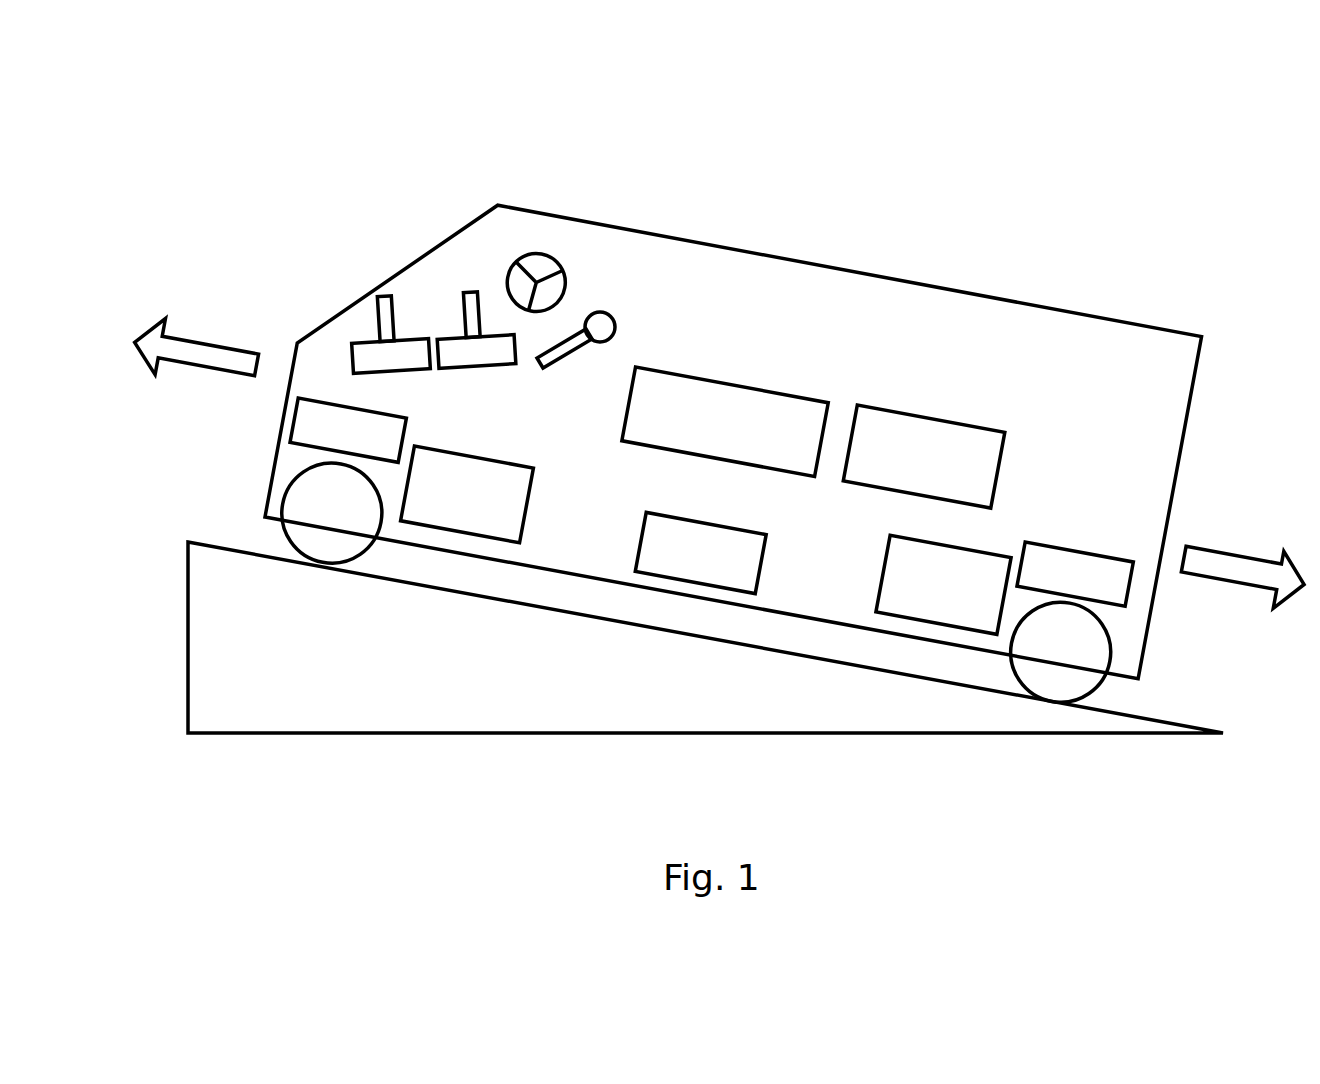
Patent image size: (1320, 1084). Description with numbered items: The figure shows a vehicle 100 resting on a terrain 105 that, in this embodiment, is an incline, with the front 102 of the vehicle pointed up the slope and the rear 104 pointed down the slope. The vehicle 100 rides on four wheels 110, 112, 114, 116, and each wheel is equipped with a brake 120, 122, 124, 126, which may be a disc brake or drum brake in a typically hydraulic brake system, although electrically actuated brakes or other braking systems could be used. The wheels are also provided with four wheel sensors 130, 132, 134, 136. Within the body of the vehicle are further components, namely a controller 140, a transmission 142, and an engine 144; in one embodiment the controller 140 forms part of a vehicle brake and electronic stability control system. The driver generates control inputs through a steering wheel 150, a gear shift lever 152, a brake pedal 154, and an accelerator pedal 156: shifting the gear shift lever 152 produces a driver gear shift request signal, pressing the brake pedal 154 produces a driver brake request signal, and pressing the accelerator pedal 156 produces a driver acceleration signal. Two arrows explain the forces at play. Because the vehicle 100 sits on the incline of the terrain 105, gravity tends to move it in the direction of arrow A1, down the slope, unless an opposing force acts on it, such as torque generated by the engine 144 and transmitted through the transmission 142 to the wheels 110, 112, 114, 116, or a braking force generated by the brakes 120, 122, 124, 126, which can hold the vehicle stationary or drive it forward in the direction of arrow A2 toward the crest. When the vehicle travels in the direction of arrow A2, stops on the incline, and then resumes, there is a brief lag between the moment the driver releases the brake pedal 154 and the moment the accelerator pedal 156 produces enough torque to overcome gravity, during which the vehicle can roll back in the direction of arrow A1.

The vehicle 100 is at (735, 392).
The front 102 is at (735, 426).
The rear 104 is at (1172, 507).
The terrain 105 is at (703, 735).
The wheel 110 is at (313, 566).
The wheel 112 is at (328, 563).
The wheel 114 is at (1066, 729).
The wheel 116 is at (1050, 703).
The brake 120 is at (300, 444).
The brake 122 is at (295, 417).
The brake 124 is at (1085, 521).
The brake 126 is at (1080, 548).
The wheel sensor 130 is at (506, 494).
The wheel sensor 132 is at (527, 505).
The wheel sensor 134 is at (904, 577).
The wheel sensor 136 is at (888, 573).
The controller 140 is at (933, 420).
The transmission 142 is at (732, 383).
The engine 144 is at (697, 587).
The steering wheel 150 is at (538, 253).
The gear shift lever 152 is at (602, 310).
The brake pedal 154 is at (475, 293).
The accelerator pedal 156 is at (388, 297).
The arrow A1 is at (1230, 583).
The arrow A2 is at (197, 370).